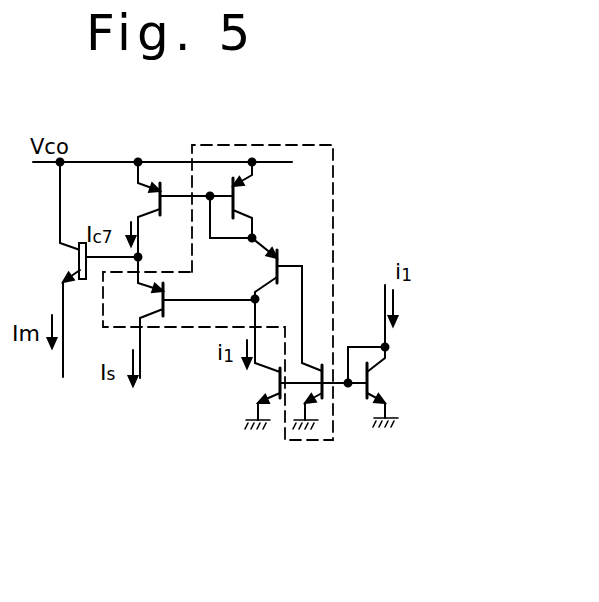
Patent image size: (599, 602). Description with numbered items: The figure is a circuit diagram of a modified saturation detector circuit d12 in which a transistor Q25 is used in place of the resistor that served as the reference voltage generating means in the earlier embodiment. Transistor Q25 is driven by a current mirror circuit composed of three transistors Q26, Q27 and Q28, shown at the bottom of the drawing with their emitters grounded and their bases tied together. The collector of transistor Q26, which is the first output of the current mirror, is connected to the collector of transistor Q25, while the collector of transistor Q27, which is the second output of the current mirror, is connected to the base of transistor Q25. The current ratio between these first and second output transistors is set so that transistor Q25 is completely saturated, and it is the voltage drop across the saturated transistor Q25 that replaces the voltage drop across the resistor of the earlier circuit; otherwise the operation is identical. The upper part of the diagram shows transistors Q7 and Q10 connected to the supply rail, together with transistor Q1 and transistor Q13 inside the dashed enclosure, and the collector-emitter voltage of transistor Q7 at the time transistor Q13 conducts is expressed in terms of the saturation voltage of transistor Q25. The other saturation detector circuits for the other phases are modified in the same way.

The transistor Q1 is at (84, 269).
The transistor Q7 is at (168, 209).
The transistor Q10 is at (247, 202).
The transistor Q13 is at (180, 316).
The transistor Q25 is at (264, 305).
The transistor Q26 is at (288, 398).
The transistor Q27 is at (318, 400).
The transistor Q28 is at (385, 356).
The saturation detector circuit d12 is at (248, 145).